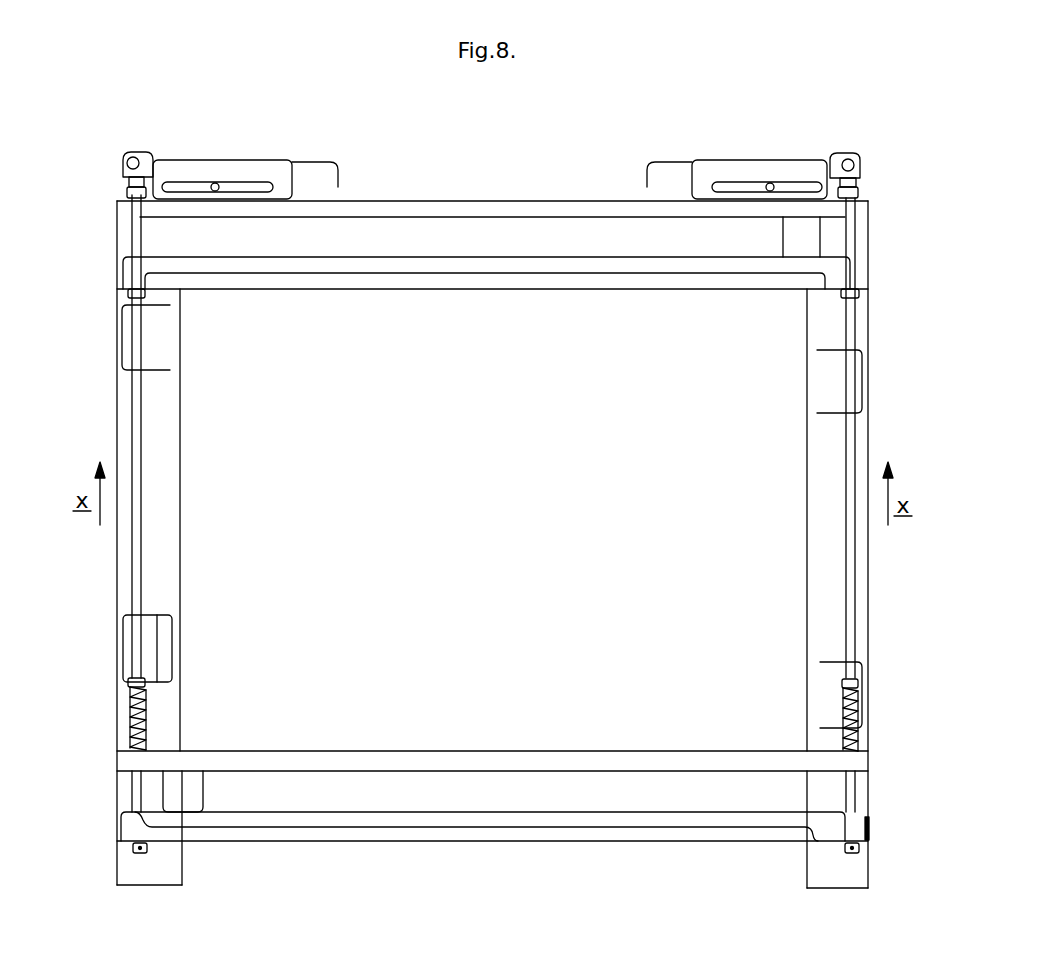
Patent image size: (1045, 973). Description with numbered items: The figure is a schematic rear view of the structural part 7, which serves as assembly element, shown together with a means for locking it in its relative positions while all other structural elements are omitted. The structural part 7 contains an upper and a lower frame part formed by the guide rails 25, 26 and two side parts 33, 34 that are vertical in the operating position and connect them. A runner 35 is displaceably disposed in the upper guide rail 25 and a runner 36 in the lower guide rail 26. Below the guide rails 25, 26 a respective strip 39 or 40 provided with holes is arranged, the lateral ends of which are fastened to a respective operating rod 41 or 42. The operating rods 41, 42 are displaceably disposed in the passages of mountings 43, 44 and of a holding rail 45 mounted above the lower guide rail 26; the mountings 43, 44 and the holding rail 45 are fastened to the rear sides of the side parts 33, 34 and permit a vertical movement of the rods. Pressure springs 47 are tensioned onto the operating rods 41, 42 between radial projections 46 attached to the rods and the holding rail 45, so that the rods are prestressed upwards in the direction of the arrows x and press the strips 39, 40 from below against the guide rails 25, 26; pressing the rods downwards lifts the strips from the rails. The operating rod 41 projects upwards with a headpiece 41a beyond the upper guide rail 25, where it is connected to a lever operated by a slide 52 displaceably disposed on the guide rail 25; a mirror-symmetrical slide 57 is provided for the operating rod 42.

The structural part 7 is at (480, 193).
The upper guide rail 25 is at (418, 208).
The lower guide rail 26 is at (432, 785).
The side part 33 is at (826, 630).
The side part 34 is at (157, 552).
The runner 35 is at (813, 235).
The runner 36 is at (190, 800).
The strip 39 is at (625, 283).
The strip 40 is at (350, 835).
The operating rod 41 is at (850, 580).
The headpiece 41a is at (857, 180).
The operating rod 42 is at (140, 405).
The mounting 43 is at (862, 385).
The mounting 44 is at (120, 332).
The holding rail 45 is at (544, 762).
The radial projection 46 is at (128, 688).
The pressure spring 47 is at (132, 738).
The slide 52 is at (805, 152).
The slide 57 is at (242, 154).